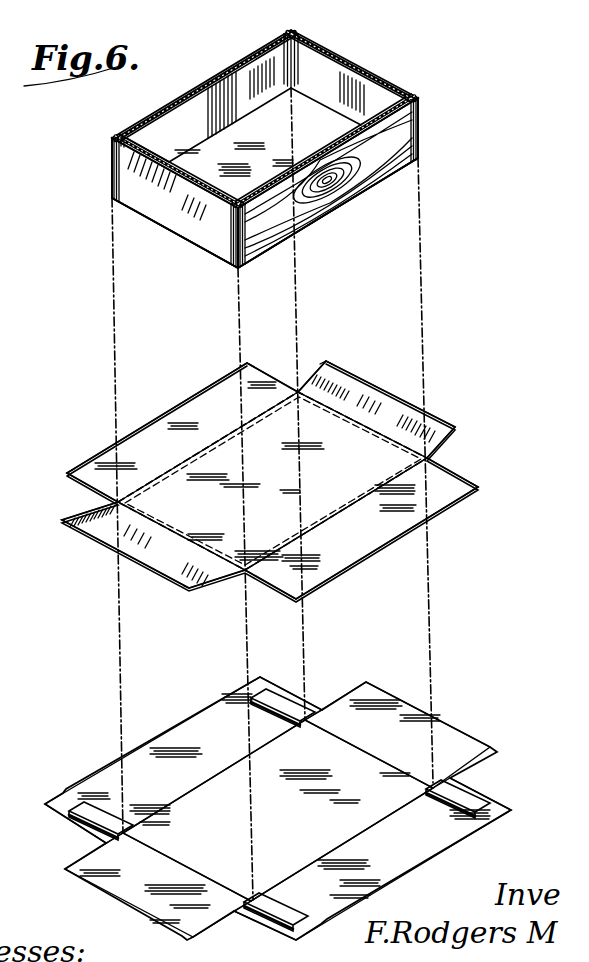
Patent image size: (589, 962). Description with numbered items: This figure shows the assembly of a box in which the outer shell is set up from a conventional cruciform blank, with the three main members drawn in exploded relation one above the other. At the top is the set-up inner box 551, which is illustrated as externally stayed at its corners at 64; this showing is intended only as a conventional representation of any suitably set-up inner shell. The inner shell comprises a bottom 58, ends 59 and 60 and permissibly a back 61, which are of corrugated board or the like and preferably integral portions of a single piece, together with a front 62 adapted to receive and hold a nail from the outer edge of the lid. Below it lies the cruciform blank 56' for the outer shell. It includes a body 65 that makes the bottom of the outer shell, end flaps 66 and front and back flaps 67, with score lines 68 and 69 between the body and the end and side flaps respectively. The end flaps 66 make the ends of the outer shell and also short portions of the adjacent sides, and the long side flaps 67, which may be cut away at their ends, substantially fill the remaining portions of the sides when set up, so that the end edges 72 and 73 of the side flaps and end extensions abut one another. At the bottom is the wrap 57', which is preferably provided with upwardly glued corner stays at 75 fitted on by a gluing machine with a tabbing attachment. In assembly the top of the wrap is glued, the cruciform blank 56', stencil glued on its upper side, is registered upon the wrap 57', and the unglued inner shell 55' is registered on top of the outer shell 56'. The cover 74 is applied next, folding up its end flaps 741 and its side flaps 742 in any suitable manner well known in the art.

The inner box 551 is at (265, 149).
The unglued inner shell 55' is at (294, 212).
The cruciform blank for the outer shell 56' is at (273, 481).
The wrap 57' is at (290, 808).
The bottom 58 is at (252, 151).
The end 59 is at (160, 217).
The end 60 is at (380, 77).
The back 61 is at (208, 109).
The front 62 is at (363, 178).
The corner stays 64 is at (112, 170).
The body 65 is at (275, 479).
The end flaps 66 is at (360, 380).
The front and back flaps 67 is at (167, 420).
The score lines 68 is at (170, 527).
The score lines 69 is at (195, 453).
The end edges of the side flaps 72 is at (252, 364).
The end edges of the end extensions 73 is at (325, 364).
The cover 74 is at (273, 780).
The end flaps of the cover 741 is at (277, 809).
The side flaps of the cover 742 is at (278, 808).
The corner stays 75 is at (289, 704).